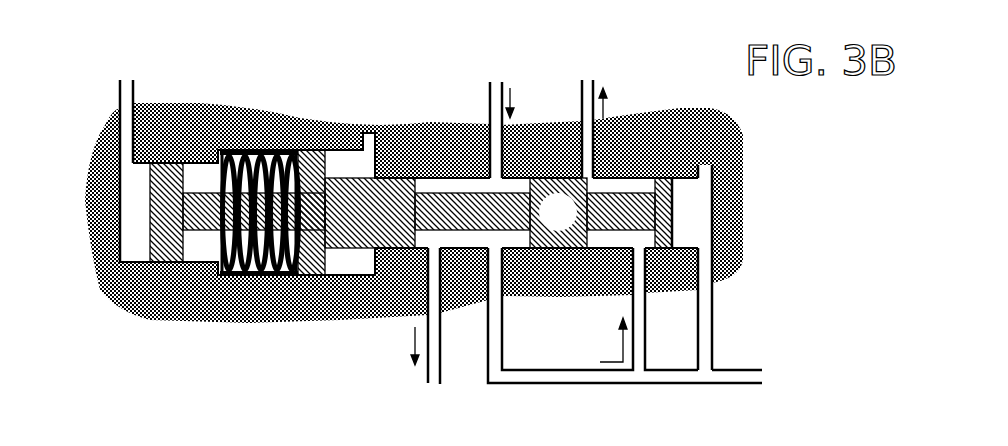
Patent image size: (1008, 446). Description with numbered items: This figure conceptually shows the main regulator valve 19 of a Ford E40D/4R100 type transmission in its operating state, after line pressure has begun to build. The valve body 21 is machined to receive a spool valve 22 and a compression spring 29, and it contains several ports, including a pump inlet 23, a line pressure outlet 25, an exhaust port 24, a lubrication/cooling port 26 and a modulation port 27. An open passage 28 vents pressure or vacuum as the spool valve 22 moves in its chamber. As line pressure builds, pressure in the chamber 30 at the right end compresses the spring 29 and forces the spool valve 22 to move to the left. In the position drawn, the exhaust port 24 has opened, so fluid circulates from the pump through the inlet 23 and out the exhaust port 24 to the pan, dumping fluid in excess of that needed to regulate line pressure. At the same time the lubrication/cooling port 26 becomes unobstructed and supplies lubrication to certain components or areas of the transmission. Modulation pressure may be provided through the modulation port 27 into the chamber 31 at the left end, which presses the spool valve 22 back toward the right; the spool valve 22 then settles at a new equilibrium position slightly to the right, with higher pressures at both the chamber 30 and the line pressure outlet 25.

The main regulator valve 19 is at (110, 335).
The valve body 21 is at (237, 298).
The spool valve 22 is at (570, 223).
The pump inlet 23 is at (490, 80).
The exhaust port 24 is at (588, 78).
The line pressure outlet 25 is at (765, 378).
The lubrication/cooling port 26 is at (437, 378).
The modulation port 27 is at (125, 75).
The open passage 28 is at (368, 135).
The compression spring 29 is at (243, 150).
The chamber 30 is at (692, 215).
The chamber 31 is at (140, 213).